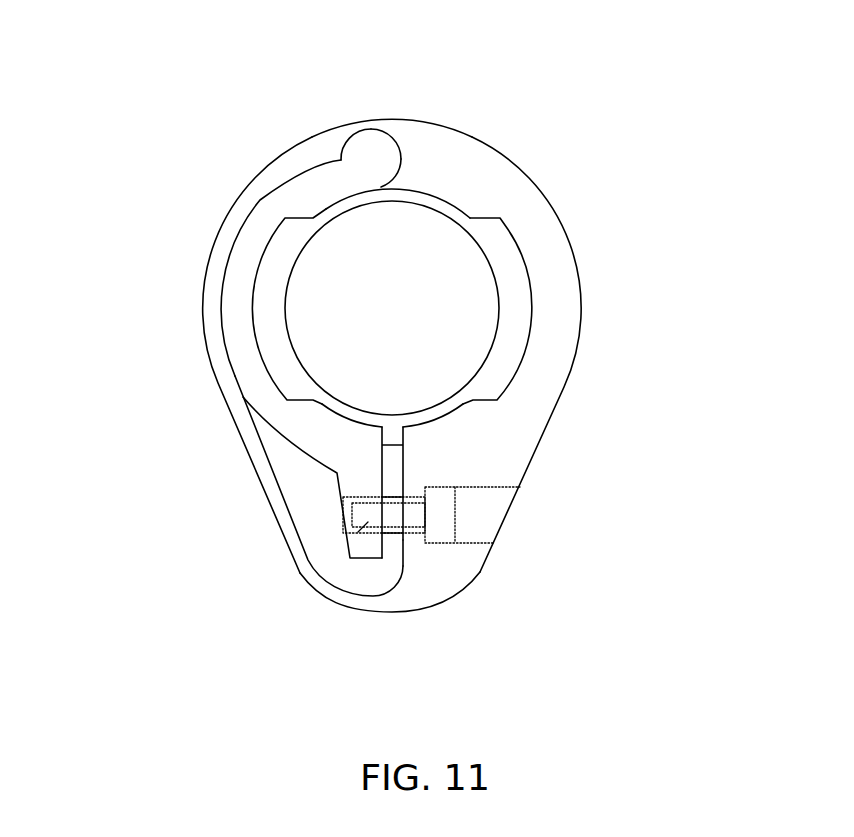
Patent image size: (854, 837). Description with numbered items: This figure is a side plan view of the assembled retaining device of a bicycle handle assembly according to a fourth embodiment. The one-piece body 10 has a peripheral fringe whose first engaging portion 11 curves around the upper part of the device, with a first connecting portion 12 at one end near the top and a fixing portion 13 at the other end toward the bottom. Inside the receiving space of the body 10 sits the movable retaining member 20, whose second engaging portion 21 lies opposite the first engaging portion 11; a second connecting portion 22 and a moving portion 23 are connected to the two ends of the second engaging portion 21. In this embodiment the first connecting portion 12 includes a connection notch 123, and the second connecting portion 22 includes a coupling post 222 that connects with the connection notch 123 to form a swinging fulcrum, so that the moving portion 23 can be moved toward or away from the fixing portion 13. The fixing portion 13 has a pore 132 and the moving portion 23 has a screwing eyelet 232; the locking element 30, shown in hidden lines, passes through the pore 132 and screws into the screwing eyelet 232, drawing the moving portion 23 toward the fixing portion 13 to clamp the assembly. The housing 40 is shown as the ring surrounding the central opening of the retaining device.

The body 10 is at (446, 334).
The first engaging portion 11 is at (559, 331).
The first connecting portion 12 is at (403, 128).
The connection notch 123 is at (370, 127).
The fixing portion 13 is at (463, 557).
The pore 132 is at (412, 533).
The movable retaining member 20 is at (307, 366).
The second engaging portion 21 is at (237, 325).
The second connecting portion 22 is at (360, 150).
The coupling post 222 is at (401, 157).
The moving portion 23 is at (352, 540).
The screwing eyelet 232 is at (367, 518).
The locking element 30 is at (467, 512).
The housing 40 is at (486, 253).